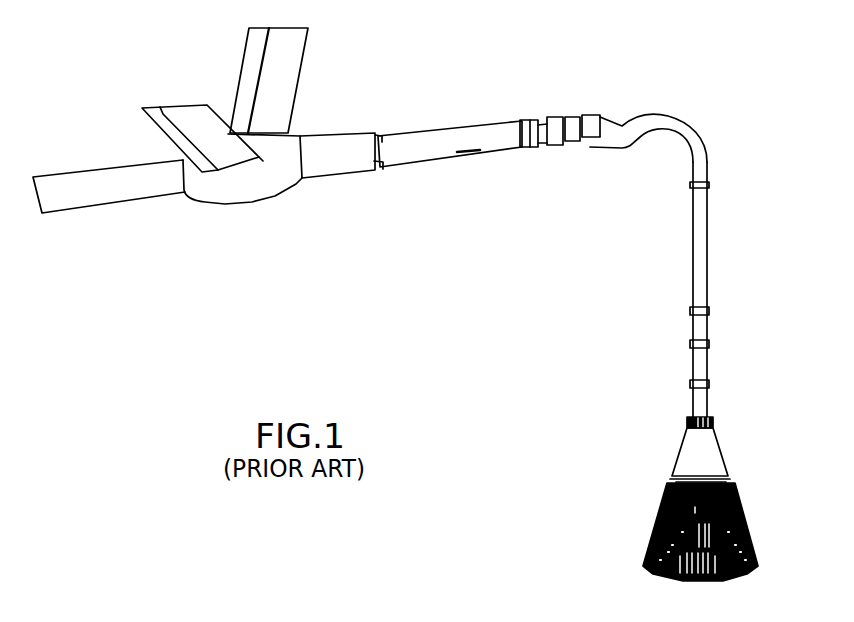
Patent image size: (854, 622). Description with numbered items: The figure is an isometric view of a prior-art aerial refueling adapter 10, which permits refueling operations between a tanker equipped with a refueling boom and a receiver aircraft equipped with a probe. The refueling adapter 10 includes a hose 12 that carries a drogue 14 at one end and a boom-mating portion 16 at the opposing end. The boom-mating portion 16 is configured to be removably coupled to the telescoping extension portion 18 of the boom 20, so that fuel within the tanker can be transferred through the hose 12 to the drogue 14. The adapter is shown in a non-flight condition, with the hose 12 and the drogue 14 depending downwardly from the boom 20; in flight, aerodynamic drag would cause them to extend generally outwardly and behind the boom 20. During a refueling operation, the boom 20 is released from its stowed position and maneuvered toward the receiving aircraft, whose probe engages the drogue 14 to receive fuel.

The refueling adapter 10 is at (668, 306).
The hose 12 is at (698, 245).
The drogue 14 is at (738, 498).
The boom-mating portion 16 is at (582, 118).
The telescoping extension portion 18 is at (435, 141).
The boom 20 is at (168, 66).